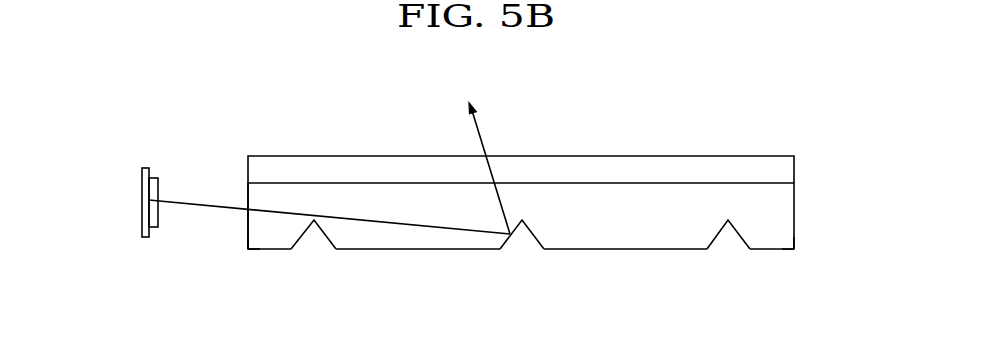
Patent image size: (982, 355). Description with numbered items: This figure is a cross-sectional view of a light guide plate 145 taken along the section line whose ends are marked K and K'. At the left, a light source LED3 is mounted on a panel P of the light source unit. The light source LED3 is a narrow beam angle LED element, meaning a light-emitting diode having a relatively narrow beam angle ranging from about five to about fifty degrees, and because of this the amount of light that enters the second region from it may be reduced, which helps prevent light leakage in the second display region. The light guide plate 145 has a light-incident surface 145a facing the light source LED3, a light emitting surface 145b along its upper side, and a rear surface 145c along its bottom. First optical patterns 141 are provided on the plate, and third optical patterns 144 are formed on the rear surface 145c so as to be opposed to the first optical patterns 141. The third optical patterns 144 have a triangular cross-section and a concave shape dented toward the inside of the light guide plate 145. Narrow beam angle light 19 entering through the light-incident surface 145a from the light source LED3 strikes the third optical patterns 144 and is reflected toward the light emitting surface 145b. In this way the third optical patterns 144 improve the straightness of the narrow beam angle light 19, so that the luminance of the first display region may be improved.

The first optical patterns 141 is at (605, 168).
The light guide plate 145 is at (795, 215).
The light-incident surface 145a is at (247, 237).
The light emitting surface 145b is at (778, 182).
The rear surface 145c is at (768, 252).
The third optical patterns 144 is at (727, 233).
The narrow beam angle light 19 is at (480, 131).
The light source LED3 is at (142, 201).
The panel P is at (142, 177).
The line K-K' endpoint K is at (251, 256).
The line K-K' endpoint K' is at (793, 256).